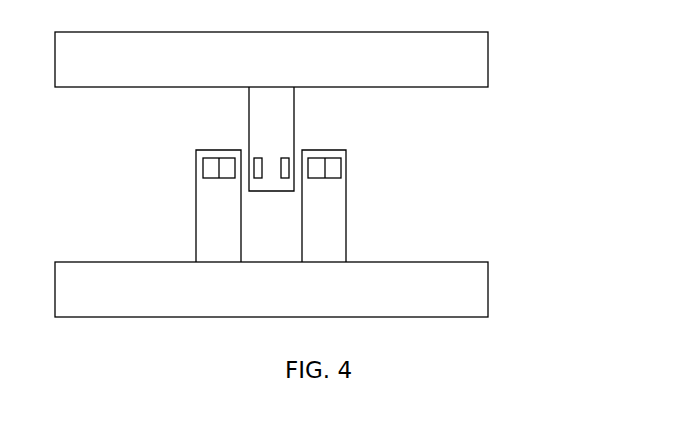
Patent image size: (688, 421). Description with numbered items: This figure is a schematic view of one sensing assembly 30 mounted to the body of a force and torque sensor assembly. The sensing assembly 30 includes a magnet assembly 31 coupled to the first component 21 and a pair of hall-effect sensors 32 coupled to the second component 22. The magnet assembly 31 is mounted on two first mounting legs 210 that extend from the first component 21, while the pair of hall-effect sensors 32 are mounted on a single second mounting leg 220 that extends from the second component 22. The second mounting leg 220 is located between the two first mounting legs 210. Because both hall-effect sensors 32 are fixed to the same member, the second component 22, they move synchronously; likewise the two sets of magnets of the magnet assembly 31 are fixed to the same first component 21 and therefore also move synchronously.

The first component 21 is at (443, 297).
The second component 22 is at (460, 58).
The second mounting leg 220 is at (267, 132).
The first mounting legs 210 is at (222, 241).
The sensing assembly 30 is at (156, 178).
The magnet assembly 31 is at (341, 157).
The hall-effect sensors 32 is at (284, 172).